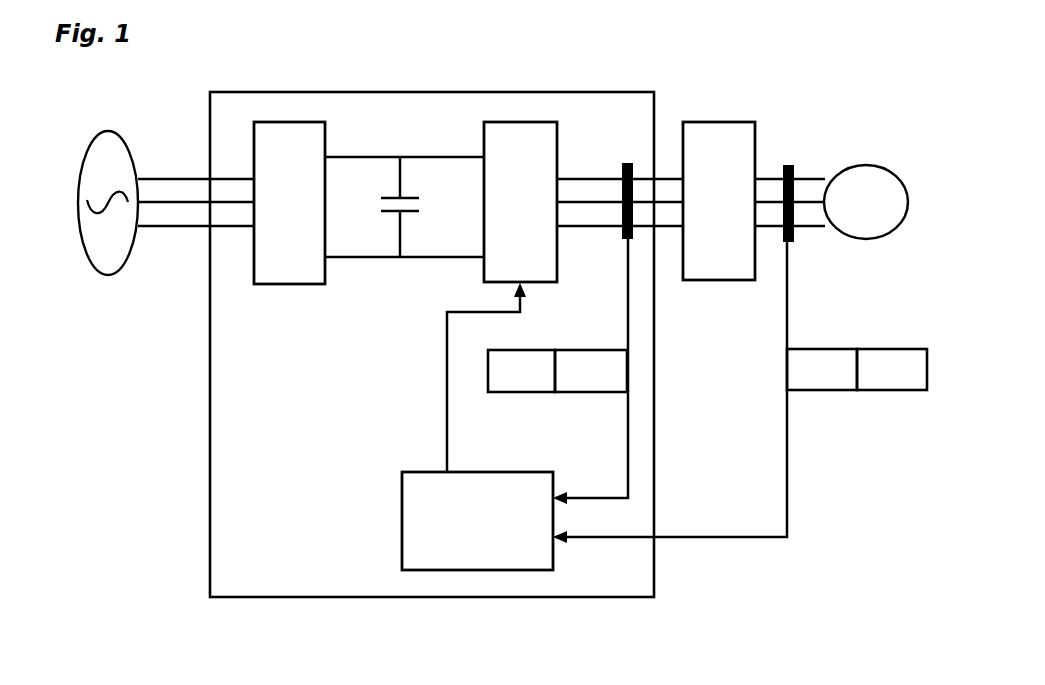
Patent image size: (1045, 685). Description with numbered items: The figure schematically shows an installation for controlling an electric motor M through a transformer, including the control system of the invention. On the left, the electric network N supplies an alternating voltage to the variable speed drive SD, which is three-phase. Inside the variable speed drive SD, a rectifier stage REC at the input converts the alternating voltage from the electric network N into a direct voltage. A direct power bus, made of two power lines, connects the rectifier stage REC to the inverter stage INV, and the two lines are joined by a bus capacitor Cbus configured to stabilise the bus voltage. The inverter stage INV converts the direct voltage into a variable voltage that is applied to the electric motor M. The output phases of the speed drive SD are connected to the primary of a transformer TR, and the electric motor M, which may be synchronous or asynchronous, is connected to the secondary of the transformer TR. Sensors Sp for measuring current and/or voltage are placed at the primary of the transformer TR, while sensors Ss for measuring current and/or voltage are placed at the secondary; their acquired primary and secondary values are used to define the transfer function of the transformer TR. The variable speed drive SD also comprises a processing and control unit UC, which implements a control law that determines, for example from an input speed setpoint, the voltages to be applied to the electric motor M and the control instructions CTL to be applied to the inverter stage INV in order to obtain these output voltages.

The variable speed drive SD is at (393, 92).
The electric network N is at (85, 166).
The rectifier stage REC is at (289, 203).
The bus capacitor Cbus is at (404, 207).
The inverter stage INV is at (583, 202).
The sensors at the primary Sp is at (622, 162).
The transformer TR is at (754, 201).
The sensors at the secondary Ss is at (789, 165).
The electric motor M is at (866, 202).
The control instructions CTL is at (462, 377).
The processing and control unit UC is at (477, 521).